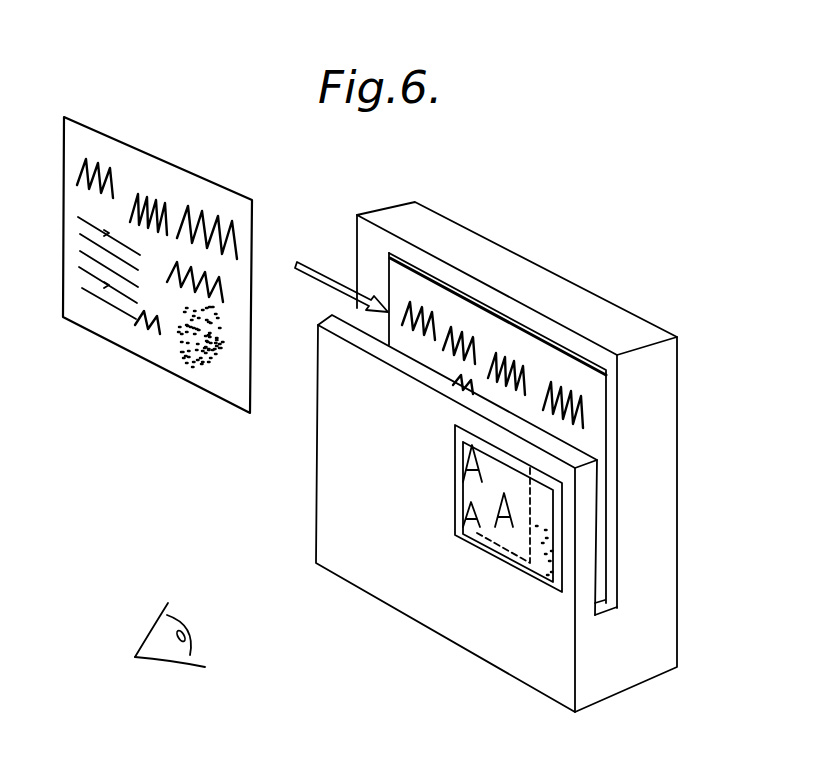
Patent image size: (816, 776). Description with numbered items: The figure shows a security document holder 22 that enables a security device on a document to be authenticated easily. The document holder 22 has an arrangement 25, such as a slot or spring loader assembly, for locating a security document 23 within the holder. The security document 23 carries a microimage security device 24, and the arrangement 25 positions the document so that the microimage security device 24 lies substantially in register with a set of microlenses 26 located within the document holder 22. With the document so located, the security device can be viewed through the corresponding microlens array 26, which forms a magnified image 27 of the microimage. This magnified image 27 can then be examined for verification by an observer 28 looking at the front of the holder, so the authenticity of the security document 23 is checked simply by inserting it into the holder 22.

The document holder 22 is at (515, 262).
The security document 23 is at (545, 348).
The microimage security device 24 is at (190, 353).
The arrangement 25 is at (612, 563).
The set of microlenses 26 is at (520, 563).
The magnified image 27 is at (472, 533).
The observer 28 is at (157, 655).